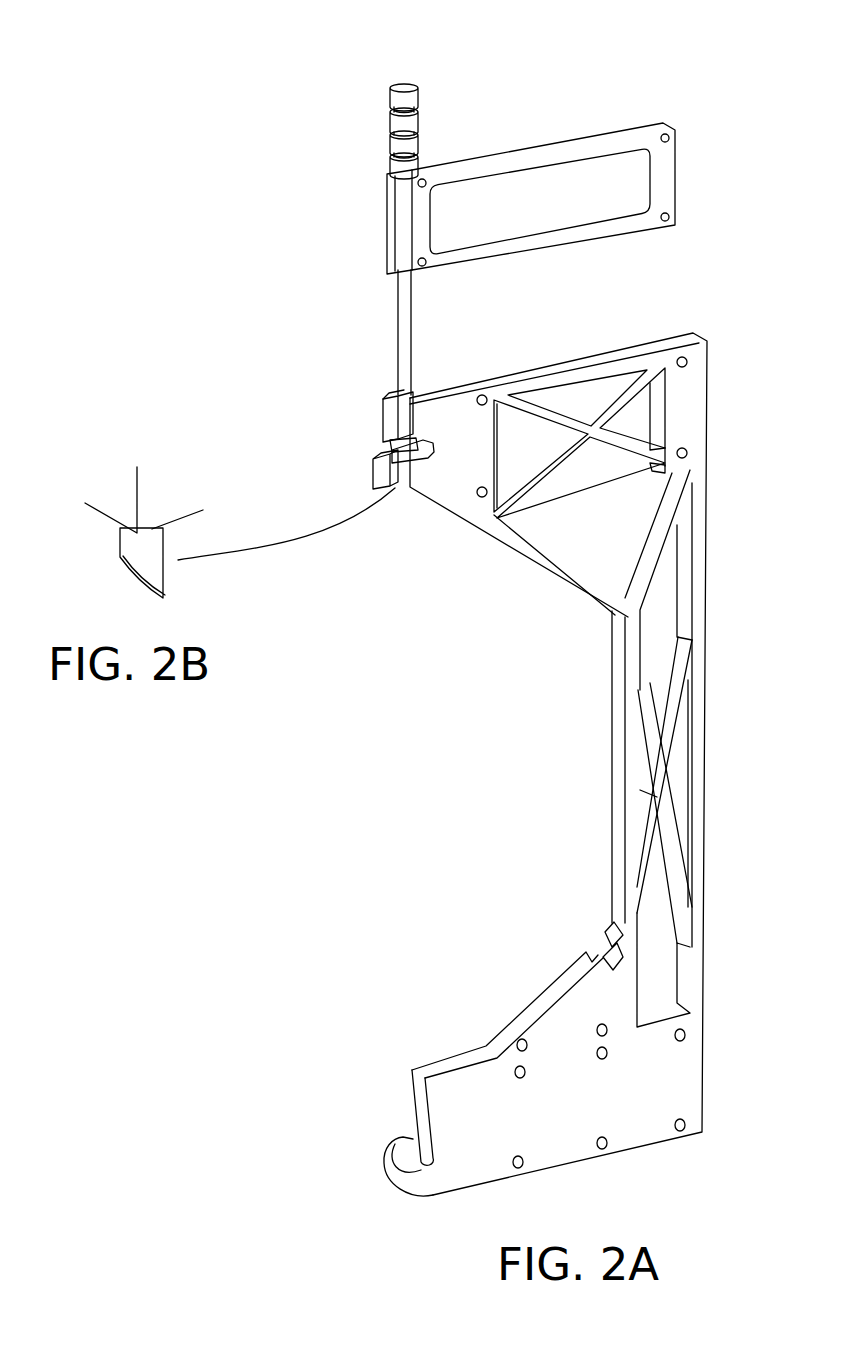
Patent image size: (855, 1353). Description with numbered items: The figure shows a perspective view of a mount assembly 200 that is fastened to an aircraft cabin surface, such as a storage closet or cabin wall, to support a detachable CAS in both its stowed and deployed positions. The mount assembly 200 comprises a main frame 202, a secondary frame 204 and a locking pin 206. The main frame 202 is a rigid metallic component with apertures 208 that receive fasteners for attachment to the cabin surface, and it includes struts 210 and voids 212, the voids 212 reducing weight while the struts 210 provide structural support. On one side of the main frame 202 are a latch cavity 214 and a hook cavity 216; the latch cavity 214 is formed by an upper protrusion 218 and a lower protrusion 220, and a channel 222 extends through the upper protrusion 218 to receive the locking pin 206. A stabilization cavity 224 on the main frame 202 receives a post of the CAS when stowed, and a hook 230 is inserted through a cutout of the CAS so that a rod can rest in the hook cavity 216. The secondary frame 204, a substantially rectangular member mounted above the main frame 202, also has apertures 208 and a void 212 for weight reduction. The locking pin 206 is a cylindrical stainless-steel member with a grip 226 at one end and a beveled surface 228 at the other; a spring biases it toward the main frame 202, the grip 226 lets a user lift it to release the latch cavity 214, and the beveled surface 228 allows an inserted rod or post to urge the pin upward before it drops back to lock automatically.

In FIG. 2A, the mount assembly 200 is at (233, 77).
In FIG. 2A, the main frame 202 is at (448, 497).
In FIG. 2A, the secondary frame 204 is at (403, 234).
In FIG. 2A, the locking pin 206 is at (398, 298).
In FIG. 2A, the apertures 208 is at (676, 132).
In FIG. 2A, the struts 210 is at (608, 395).
In FIG. 2A, the voids 212 is at (614, 189).
In FIG. 2A, the latch cavity 214 is at (390, 443).
In FIG. 2A, the hook cavity 216 is at (416, 1140).
In FIG. 2A, the upper protrusion 218 is at (390, 417).
In FIG. 2A, the lower protrusion 220 is at (380, 473).
In FIG. 2A, the channel 222 is at (403, 403).
In FIG. 2A, the stabilization cavity 224 is at (603, 948).
In FIG. 2A, the grip 226 is at (400, 145).
In FIG. 2B, the beveled surface 228 is at (137, 572).
In FIG. 2A, the hook 230 is at (402, 1164).